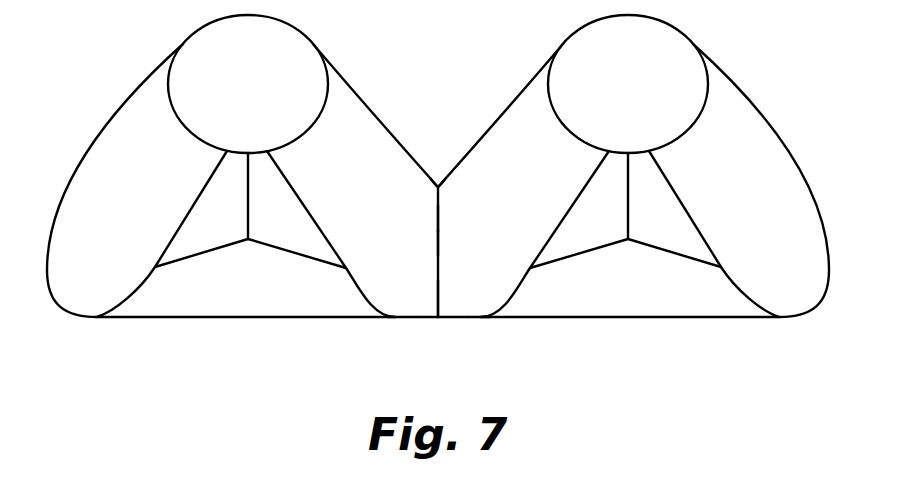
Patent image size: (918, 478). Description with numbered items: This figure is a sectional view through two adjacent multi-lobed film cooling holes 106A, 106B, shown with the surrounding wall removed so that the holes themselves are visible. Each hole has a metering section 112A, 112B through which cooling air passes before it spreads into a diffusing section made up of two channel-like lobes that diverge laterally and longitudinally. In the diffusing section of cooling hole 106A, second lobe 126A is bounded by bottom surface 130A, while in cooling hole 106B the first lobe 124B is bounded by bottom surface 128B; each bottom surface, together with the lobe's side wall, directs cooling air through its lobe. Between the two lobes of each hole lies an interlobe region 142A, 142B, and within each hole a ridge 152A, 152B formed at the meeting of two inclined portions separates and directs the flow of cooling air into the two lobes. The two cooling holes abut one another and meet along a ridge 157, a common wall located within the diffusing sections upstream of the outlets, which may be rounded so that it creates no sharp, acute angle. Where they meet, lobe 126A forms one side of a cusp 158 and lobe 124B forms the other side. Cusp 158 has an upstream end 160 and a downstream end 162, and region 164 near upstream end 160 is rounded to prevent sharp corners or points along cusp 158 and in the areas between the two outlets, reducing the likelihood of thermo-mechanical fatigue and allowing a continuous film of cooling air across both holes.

The cooling hole 106A is at (736, 111).
The cooling hole 106B is at (140, 111).
The metering section 112A is at (656, 95).
The metering section 112B is at (272, 95).
The first lobe 124B is at (394, 314).
The second lobe 126A is at (491, 293).
The bottom surface 128B is at (423, 300).
The bottom surface 130A is at (465, 297).
The interlobe region 142A is at (668, 298).
The interlobe region 142B is at (179, 298).
The ridge 152A is at (628, 203).
The ridge 152B is at (248, 203).
The ridge 157 is at (423, 218).
The cusp 158 is at (454, 242).
The upstream end 160 is at (440, 212).
The downstream end 162 is at (437, 290).
The region 164 is at (437, 165).